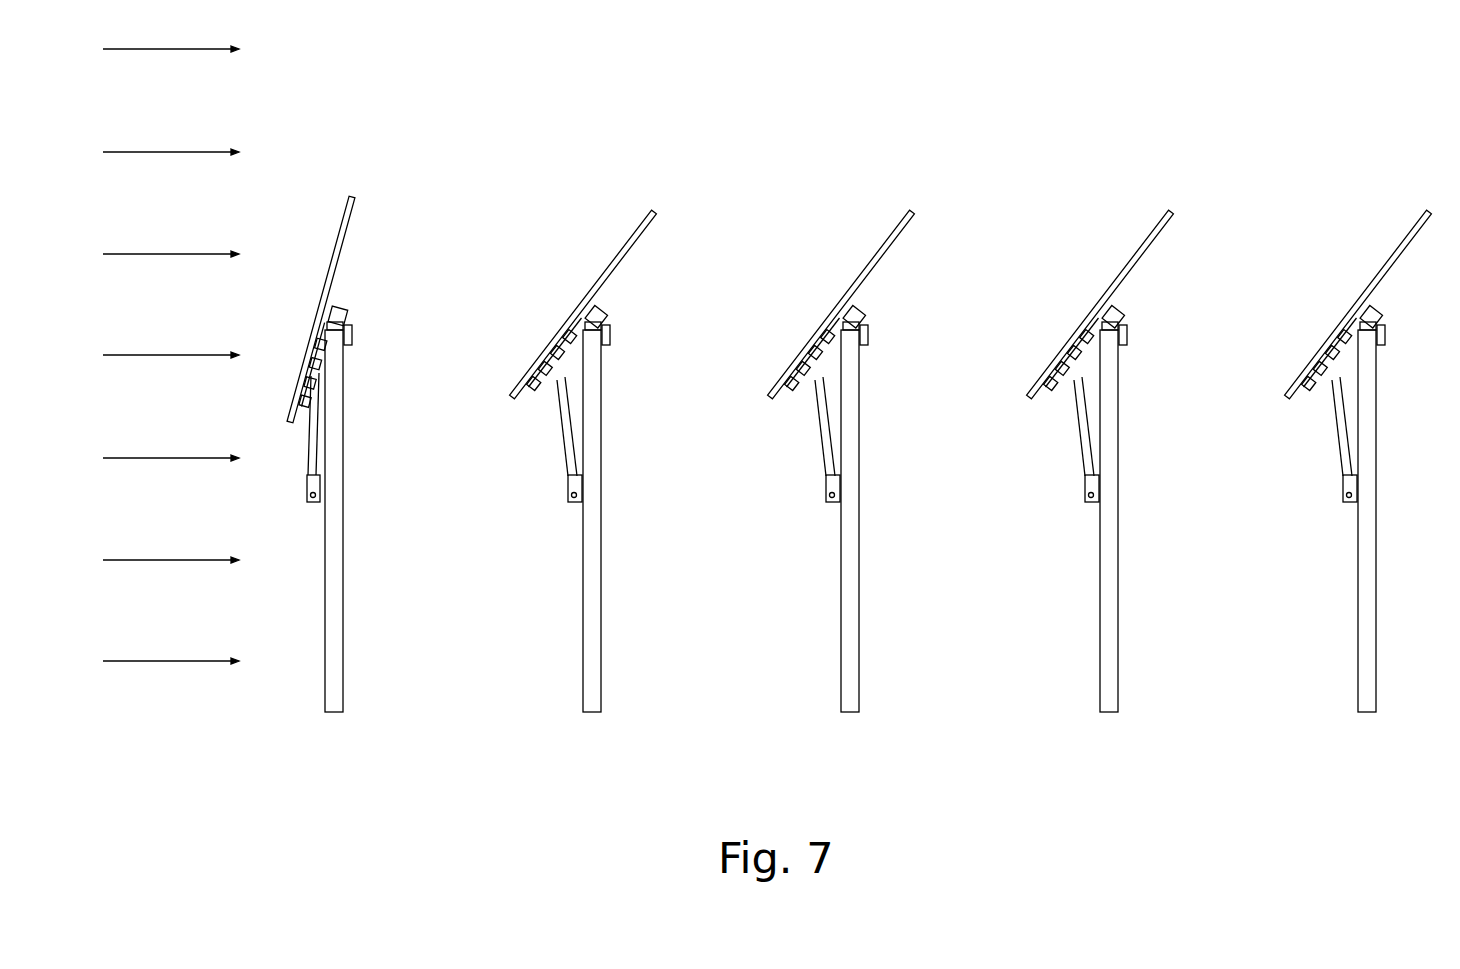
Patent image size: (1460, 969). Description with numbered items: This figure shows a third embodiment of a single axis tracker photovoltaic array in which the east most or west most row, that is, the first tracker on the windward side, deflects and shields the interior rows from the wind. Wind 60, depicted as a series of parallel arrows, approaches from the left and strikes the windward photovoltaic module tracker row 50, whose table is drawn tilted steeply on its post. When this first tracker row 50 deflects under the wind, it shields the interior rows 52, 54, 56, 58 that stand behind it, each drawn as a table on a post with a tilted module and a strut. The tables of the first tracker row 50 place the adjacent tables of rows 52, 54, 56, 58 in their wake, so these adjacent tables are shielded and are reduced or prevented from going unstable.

The wind 60 is at (192, 49).
The windward photovoltaic module tracker row 50 is at (334, 713).
The interior row 52 is at (580, 330).
The interior row 54 is at (838, 330).
The interior row 56 is at (1097, 330).
The interior row 58 is at (1355, 330).